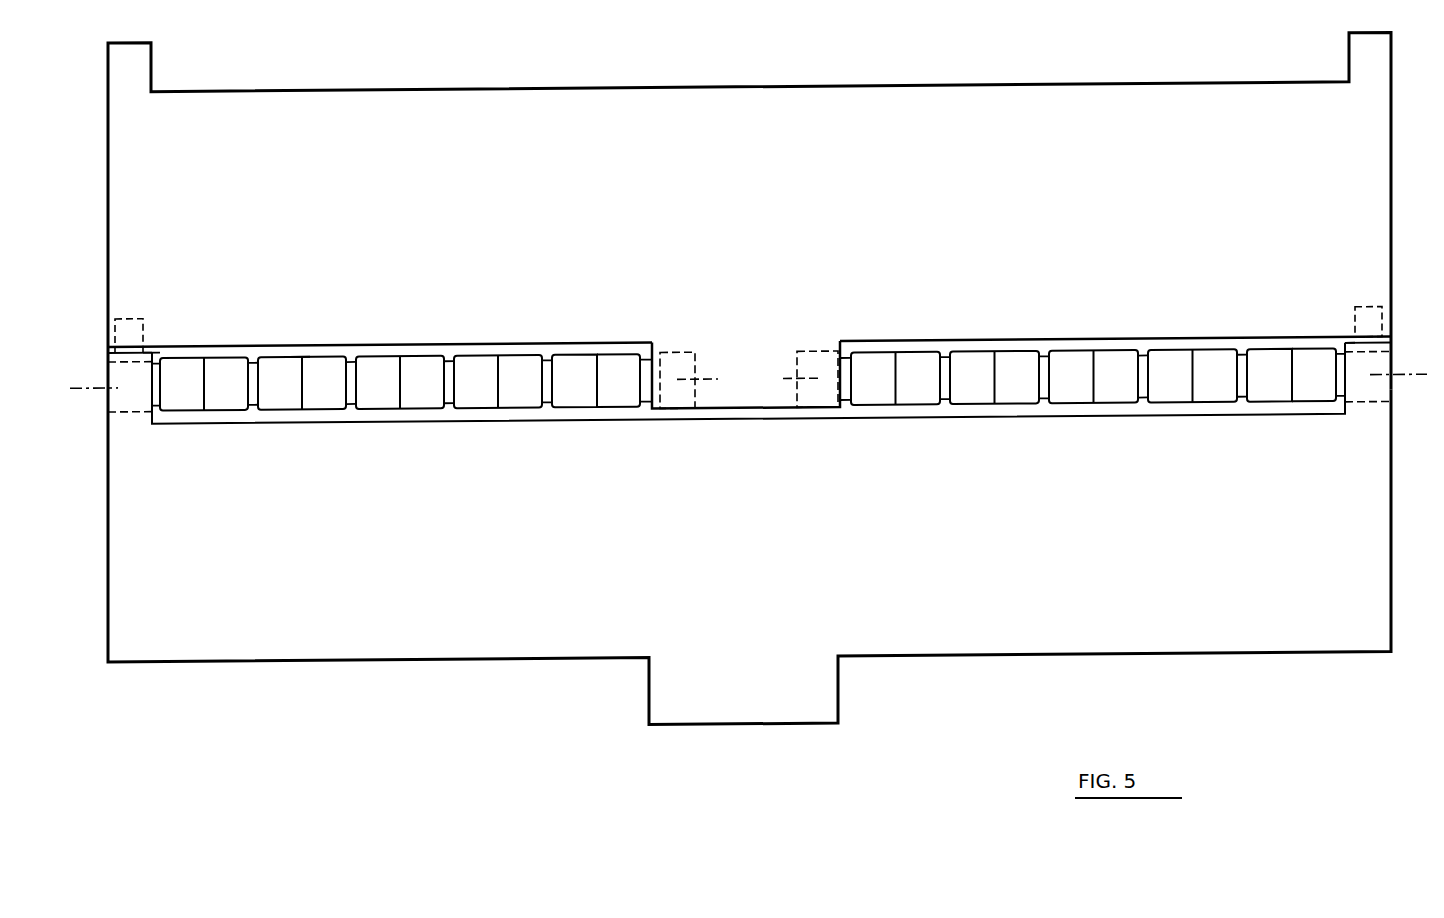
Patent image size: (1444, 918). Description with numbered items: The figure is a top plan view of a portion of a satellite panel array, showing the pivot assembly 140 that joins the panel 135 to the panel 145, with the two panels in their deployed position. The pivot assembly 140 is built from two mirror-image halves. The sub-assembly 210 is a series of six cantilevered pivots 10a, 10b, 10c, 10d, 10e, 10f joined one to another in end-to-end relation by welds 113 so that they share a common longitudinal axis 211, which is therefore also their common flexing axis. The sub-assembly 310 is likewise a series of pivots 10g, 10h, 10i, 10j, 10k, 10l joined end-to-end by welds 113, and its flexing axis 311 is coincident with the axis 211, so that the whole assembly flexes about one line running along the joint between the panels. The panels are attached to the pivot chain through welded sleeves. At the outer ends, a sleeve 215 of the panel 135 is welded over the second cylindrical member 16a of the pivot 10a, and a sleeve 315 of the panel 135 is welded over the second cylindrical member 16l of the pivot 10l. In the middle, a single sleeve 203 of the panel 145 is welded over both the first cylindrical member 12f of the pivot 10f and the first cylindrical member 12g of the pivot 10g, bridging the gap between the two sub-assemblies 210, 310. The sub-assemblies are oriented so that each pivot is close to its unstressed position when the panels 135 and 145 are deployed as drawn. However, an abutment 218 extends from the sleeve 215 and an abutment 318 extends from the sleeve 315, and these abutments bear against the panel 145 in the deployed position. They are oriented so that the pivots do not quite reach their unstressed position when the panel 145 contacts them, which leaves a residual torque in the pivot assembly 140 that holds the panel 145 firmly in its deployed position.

The pivot 10a is at (193, 358).
The pivot 10b is at (283, 357).
The pivot 10c is at (383, 357).
The pivot 10d is at (480, 356).
The pivot 10e is at (580, 355).
The pivot 10f is at (625, 355).
The pivot 10g is at (875, 351).
The pivot 10h is at (975, 351).
The pivot 10i is at (1072, 350).
The pivot 10j is at (1172, 350).
The pivot 10k is at (1266, 348).
The pivot 10l is at (1307, 348).
The first cylindrical member 12f is at (683, 352).
The first cylindrical member 12g is at (818, 352).
The second cylindrical member 16a is at (133, 413).
The second cylindrical member 16l is at (1375, 403).
The weld 113 is at (303, 352).
The panel 135 is at (778, 565).
The pivot assembly 140 is at (666, 442).
The panel 145 is at (712, 230).
The sleeve 203 is at (765, 418).
The sub-assembly 210 is at (428, 350).
The longitudinal axis 211 is at (82, 386).
The sleeve 215 is at (145, 348).
The abutment 218 is at (130, 318).
The sub-assembly 310 is at (1014, 347).
The flexing axis 311 is at (788, 380).
The sleeve 315 is at (1352, 337).
The abutment 318 is at (1366, 306).